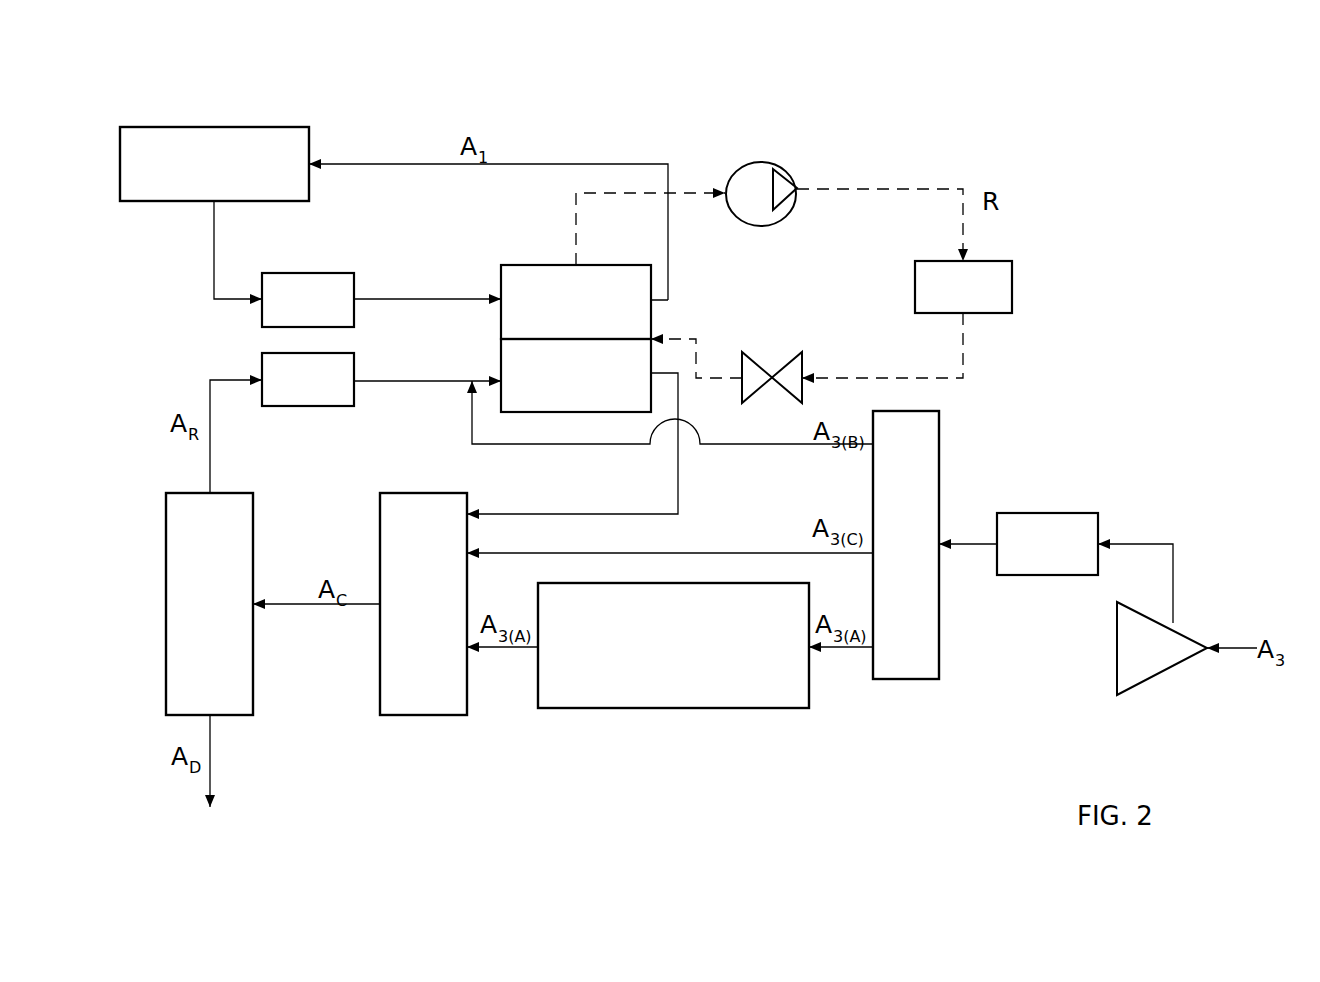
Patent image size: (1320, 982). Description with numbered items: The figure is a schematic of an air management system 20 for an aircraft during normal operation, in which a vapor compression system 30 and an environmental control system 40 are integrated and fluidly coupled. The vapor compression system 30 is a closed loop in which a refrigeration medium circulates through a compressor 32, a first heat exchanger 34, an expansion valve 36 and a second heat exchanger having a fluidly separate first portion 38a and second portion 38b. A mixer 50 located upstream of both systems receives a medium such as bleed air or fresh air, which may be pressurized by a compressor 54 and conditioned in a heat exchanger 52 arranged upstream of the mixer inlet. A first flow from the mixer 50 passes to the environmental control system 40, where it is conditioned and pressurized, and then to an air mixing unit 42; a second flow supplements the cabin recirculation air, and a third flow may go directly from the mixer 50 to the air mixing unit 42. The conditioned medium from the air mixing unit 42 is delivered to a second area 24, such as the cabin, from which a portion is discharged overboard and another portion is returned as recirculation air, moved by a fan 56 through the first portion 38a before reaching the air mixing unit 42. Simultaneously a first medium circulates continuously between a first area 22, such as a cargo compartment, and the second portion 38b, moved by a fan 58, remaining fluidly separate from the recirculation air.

The air management system 20 is at (1110, 123).
The first area 22 is at (214, 164).
The second area 24 is at (209, 604).
The vapor compression system 30 is at (940, 155).
The compressor 32 is at (760, 162).
The first heat exchanger 34 is at (963, 287).
The expansion valve 36 is at (790, 380).
The first portion 38a is at (576, 375).
The second portion 38b is at (576, 302).
The environmental control system 40 is at (673, 645).
The air mixing unit 42 is at (423, 604).
The mixer 50 is at (906, 545).
The heat exchanger 52 is at (1047, 544).
The compressor 54 is at (1162, 648).
The fan 56 is at (308, 379).
The fan 58 is at (308, 300).